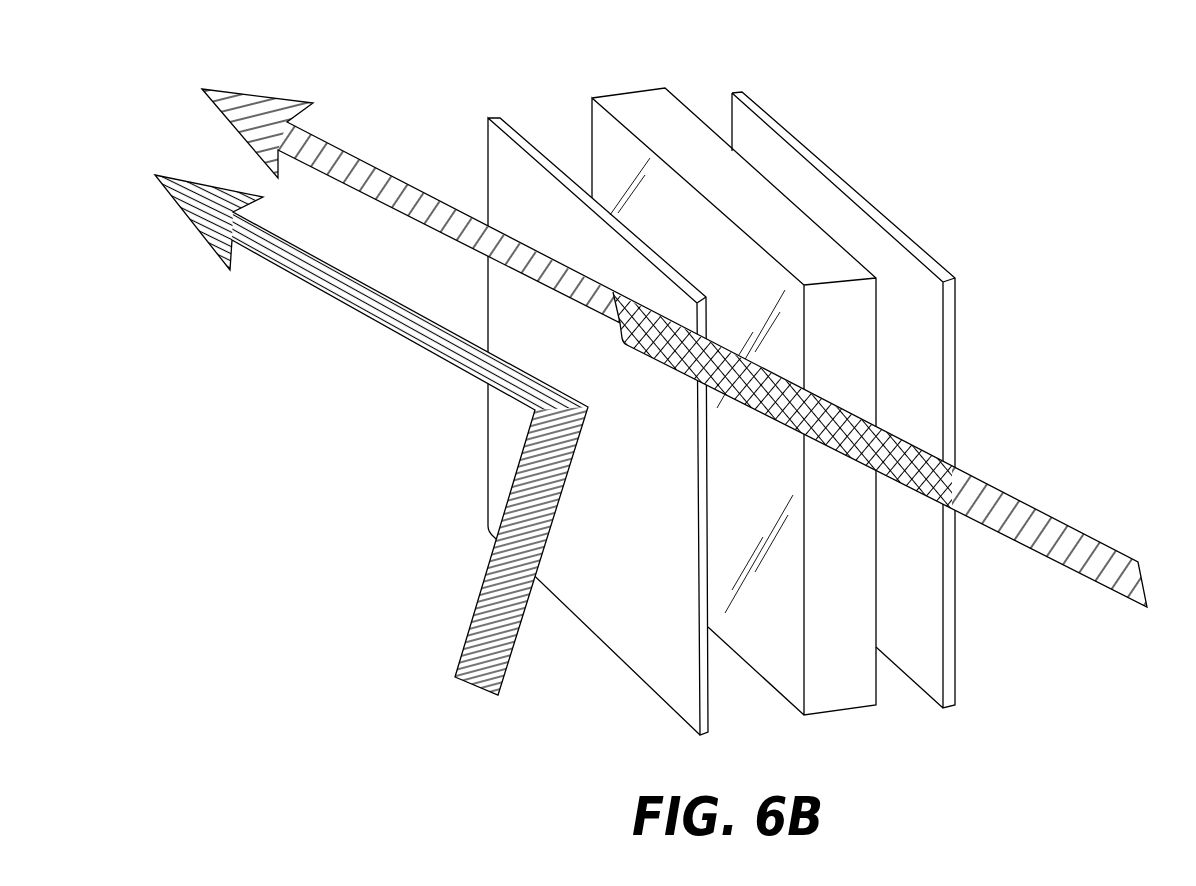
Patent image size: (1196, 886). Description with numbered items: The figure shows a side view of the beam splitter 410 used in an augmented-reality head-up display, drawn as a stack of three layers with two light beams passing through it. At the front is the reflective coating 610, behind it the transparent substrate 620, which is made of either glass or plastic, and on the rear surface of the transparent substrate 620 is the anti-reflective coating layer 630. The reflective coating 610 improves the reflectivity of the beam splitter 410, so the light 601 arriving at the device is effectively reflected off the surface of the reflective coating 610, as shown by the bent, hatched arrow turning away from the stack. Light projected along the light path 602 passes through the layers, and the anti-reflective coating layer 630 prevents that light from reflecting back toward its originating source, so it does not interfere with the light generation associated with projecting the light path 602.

The beam splitter 410 is at (527, 34).
The reflective coating 610 is at (497, 168).
The transparent substrate 620 is at (638, 110).
The anti-reflective coating layer 630 is at (852, 188).
The light 601 is at (472, 687).
The light path 602 is at (1142, 565).